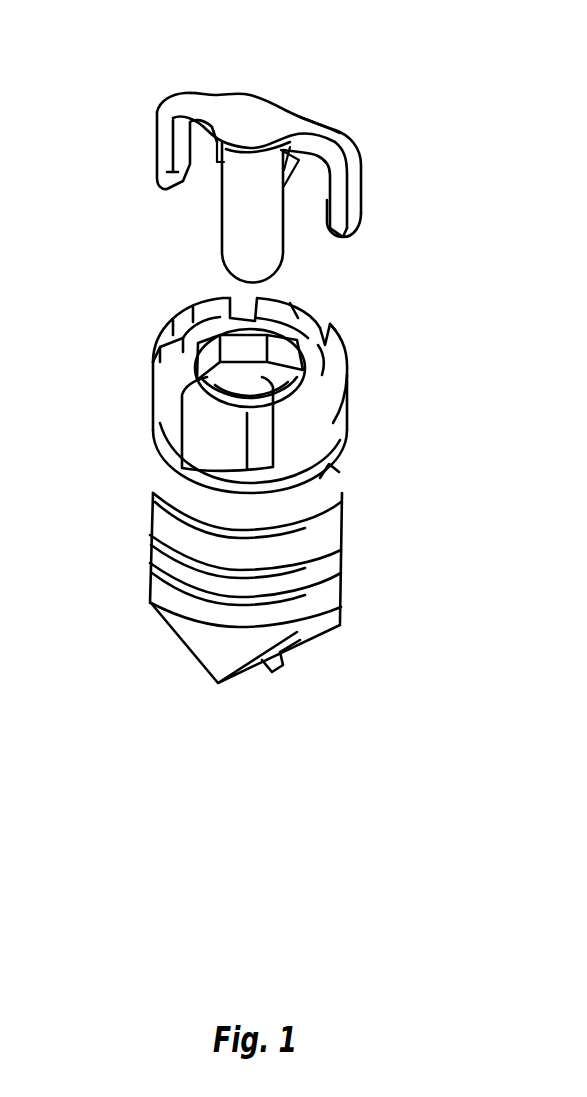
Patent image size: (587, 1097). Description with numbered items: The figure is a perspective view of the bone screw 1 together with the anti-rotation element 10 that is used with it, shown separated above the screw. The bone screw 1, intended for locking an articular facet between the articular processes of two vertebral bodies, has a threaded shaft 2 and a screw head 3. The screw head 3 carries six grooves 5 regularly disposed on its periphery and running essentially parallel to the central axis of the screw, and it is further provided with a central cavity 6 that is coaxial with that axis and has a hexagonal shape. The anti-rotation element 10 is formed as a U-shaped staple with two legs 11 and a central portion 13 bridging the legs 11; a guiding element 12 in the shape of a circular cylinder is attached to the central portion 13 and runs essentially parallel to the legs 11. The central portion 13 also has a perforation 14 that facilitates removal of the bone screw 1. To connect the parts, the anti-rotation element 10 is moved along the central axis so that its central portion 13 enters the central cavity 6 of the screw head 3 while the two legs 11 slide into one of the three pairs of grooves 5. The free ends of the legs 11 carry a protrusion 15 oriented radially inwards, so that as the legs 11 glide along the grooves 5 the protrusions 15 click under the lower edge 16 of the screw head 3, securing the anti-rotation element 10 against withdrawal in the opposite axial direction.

The bone screw 1 is at (267, 490).
The threaded shaft 2 is at (300, 598).
The screw head 3 is at (163, 383).
The grooves 5 is at (327, 340).
The central cavity 6 is at (300, 392).
The anti-rotation element 10 is at (269, 137).
The legs 11 is at (157, 170).
The guiding element 12 is at (247, 235).
The central portion 13 is at (327, 123).
The perforation 14 is at (220, 130).
The protrusion 15 is at (167, 158).
The lower edge 16 is at (177, 463).